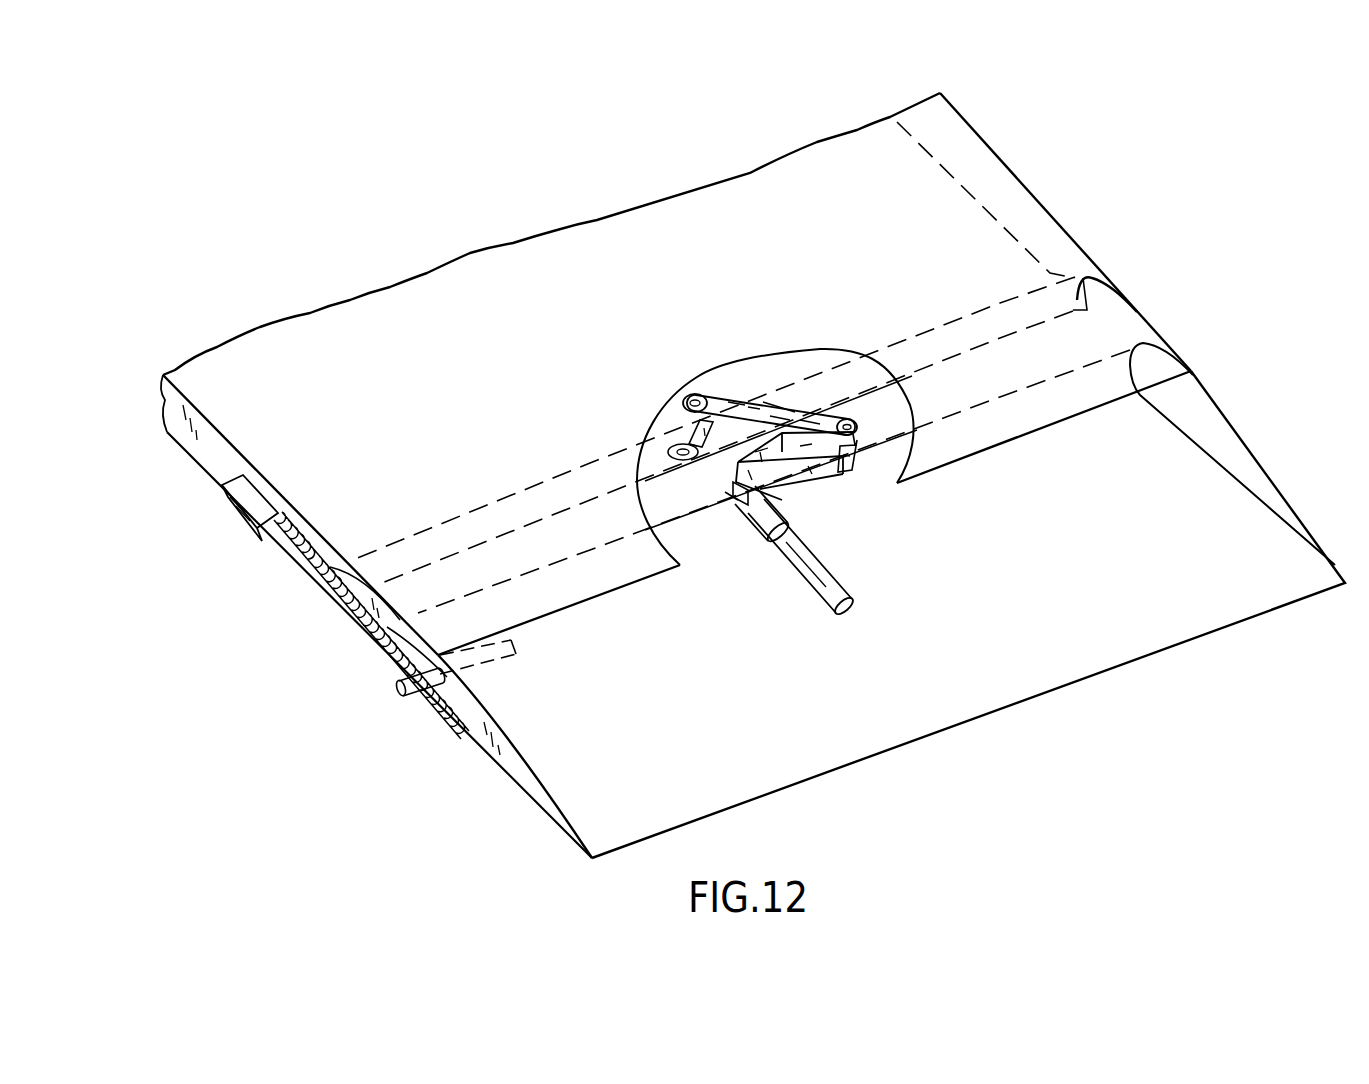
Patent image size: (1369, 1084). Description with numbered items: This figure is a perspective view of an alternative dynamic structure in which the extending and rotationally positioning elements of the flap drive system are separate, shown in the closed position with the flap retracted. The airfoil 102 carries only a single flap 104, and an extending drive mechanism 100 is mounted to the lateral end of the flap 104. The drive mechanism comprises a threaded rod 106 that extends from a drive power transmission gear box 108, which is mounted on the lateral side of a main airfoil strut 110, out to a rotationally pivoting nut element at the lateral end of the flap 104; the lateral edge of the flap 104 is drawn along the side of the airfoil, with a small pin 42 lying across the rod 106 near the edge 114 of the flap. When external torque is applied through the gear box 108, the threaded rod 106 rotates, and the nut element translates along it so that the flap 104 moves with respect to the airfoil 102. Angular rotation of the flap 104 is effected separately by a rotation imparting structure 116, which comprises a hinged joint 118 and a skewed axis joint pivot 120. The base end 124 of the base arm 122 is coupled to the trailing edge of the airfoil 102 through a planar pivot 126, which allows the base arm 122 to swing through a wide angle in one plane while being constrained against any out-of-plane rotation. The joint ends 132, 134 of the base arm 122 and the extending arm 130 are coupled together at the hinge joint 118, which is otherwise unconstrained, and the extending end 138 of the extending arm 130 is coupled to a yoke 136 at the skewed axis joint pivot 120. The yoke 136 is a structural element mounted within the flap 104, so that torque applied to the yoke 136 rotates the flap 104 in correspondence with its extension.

The pin 42 is at (396, 688).
The extending drive mechanism 100 is at (288, 607).
The airfoil 102 is at (423, 411).
The flap 104 is at (855, 708).
The threaded rod 106 is at (355, 612).
The drive power transmission gear box 108 is at (232, 502).
The main airfoil strut 110 is at (237, 467).
The side edge of lower plate 114 is at (512, 767).
The rotation imparting structure 116 is at (751, 385).
The hinged joint 118 is at (848, 405).
The skewed axis joint pivot 120 is at (737, 497).
The base arm 122 is at (718, 454).
The base end 124 is at (678, 388).
The planar pivot 126 is at (670, 420).
The extending arm 130 is at (808, 484).
The joint end 132 is at (793, 413).
The joint end 134 is at (860, 460).
The yoke 136 is at (827, 570).
The extending end 138 is at (732, 499).